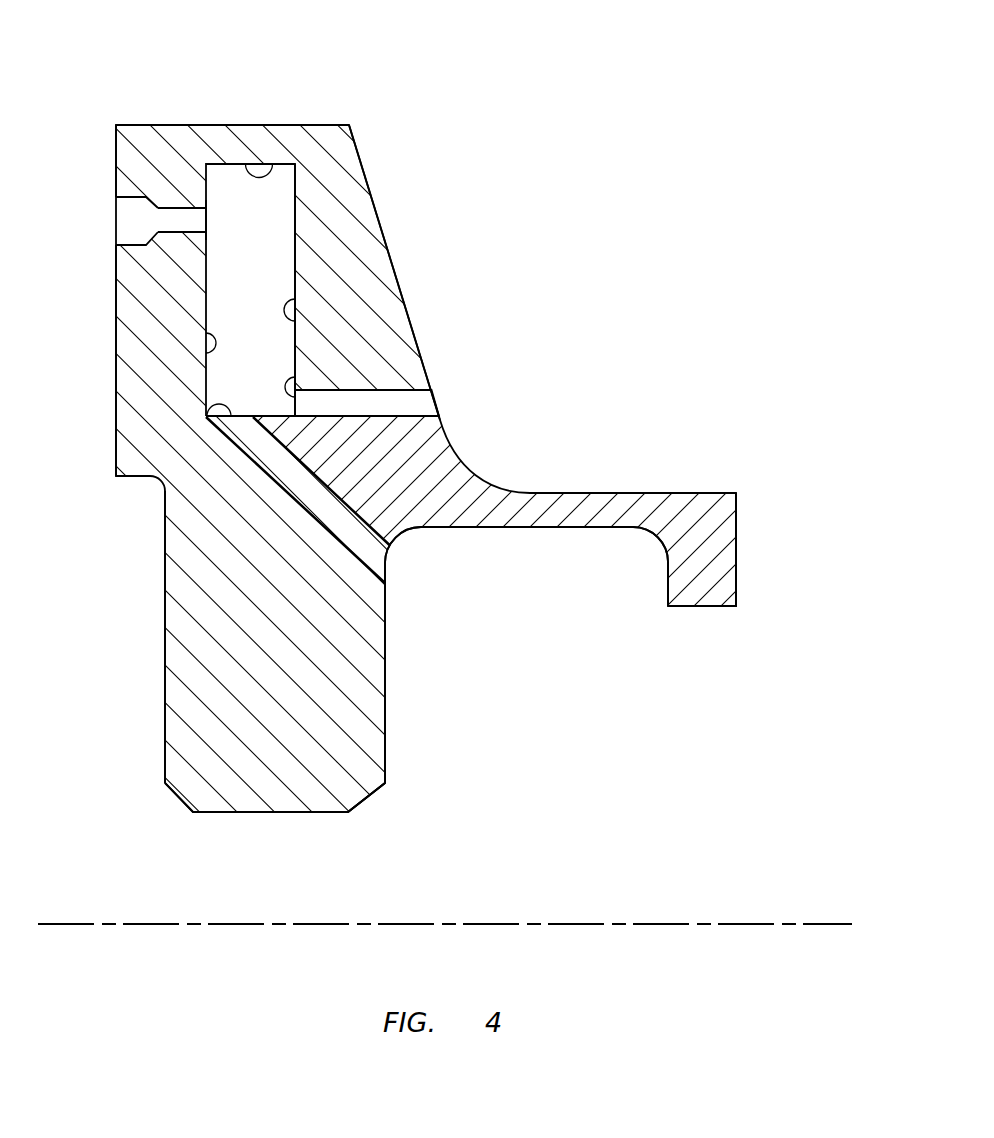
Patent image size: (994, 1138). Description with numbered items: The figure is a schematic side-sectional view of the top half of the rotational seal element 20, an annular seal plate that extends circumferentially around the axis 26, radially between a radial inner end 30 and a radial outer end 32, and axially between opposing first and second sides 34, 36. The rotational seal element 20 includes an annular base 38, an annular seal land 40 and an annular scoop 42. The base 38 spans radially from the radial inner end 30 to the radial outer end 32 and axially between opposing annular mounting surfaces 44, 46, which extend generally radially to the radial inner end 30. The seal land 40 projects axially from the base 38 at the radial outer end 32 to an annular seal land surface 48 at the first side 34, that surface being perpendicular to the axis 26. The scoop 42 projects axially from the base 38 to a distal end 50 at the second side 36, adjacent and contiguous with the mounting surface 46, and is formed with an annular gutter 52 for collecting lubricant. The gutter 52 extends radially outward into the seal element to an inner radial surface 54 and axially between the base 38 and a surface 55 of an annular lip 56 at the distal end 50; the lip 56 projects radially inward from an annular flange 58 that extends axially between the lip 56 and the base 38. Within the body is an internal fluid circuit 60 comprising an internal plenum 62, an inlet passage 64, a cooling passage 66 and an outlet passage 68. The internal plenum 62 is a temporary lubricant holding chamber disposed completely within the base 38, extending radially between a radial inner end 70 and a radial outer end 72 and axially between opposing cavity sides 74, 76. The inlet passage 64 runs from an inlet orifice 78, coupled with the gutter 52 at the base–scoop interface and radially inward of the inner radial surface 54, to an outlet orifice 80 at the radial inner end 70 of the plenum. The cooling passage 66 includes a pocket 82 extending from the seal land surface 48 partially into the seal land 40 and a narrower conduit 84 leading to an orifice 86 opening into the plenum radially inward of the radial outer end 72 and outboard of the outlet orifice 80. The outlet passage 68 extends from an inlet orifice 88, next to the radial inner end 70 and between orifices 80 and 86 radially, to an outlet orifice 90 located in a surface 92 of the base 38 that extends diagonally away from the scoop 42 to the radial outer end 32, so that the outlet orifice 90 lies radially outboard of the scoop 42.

The rotational seal element 20 is at (580, 150).
The axis 26 is at (728, 918).
The radial inner end 30 is at (284, 836).
The radial outer end 32 is at (228, 106).
The first side 34 is at (96, 404).
The second side 36 is at (762, 549).
The annular base 38 is at (384, 700).
The annular seal land 40 is at (127, 312).
The annular scoop 42 is at (578, 503).
The annular mounting surface 44 is at (165, 720).
The annular mounting surface 46 is at (386, 737).
The annular seal land surface 48 is at (116, 160).
The distal end 50 is at (737, 505).
The annular gutter 52 is at (504, 598).
The inner radial surface 54 is at (580, 529).
The surface 55 is at (667, 584).
The annular lip 56 is at (728, 589).
The annular flange 58 is at (667, 493).
The internal fluid circuit 60 is at (300, 222).
The internal plenum 62 is at (242, 274).
The inlet passage 64 is at (324, 520).
The cooling passage 66 is at (175, 196).
The outlet passage 68 is at (400, 402).
The radial inner end 70 is at (270, 415).
The radial outer end 72 is at (271, 165).
The cavity side 74 is at (208, 345).
The cavity side 76 is at (296, 310).
The inlet orifice 78 is at (388, 563).
The outlet orifice 80 is at (208, 411).
The pocket 82 is at (126, 225).
The conduit 84 is at (180, 233).
The orifice 86 is at (208, 224).
The inlet orifice 88 is at (297, 387).
The outlet orifice 90 is at (441, 402).
The surface 92 is at (401, 293).